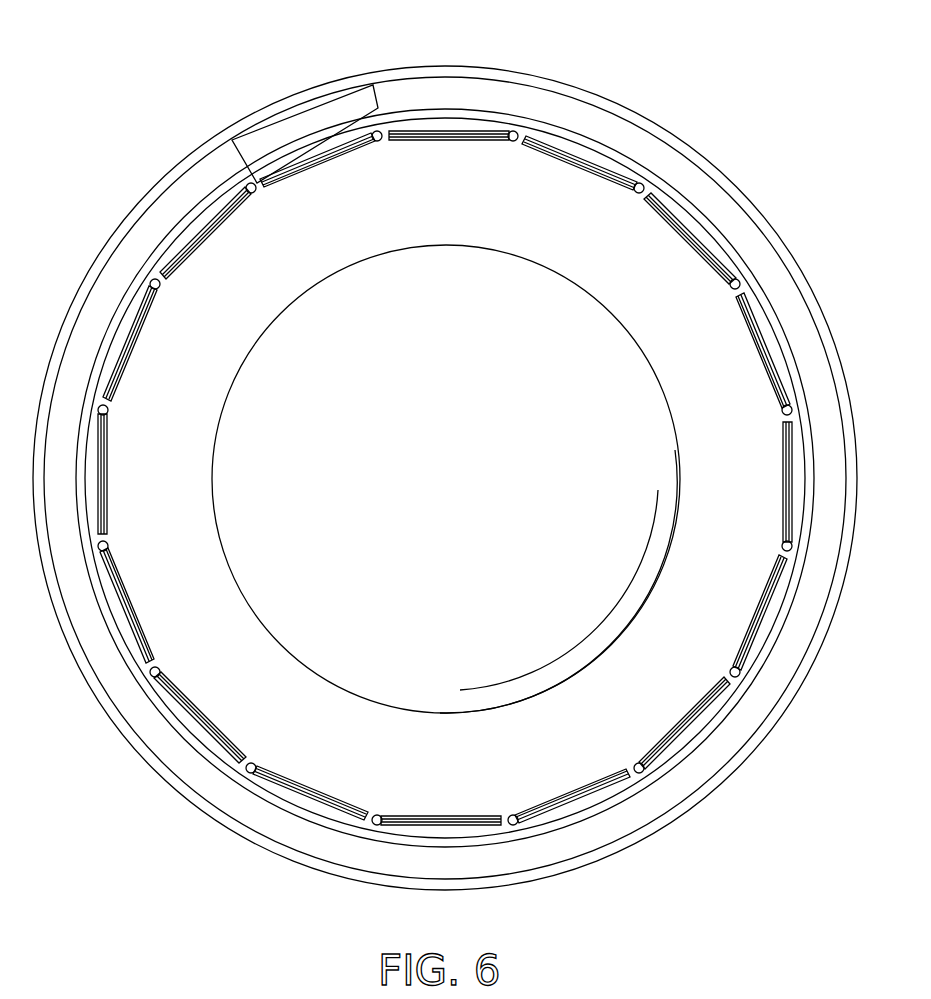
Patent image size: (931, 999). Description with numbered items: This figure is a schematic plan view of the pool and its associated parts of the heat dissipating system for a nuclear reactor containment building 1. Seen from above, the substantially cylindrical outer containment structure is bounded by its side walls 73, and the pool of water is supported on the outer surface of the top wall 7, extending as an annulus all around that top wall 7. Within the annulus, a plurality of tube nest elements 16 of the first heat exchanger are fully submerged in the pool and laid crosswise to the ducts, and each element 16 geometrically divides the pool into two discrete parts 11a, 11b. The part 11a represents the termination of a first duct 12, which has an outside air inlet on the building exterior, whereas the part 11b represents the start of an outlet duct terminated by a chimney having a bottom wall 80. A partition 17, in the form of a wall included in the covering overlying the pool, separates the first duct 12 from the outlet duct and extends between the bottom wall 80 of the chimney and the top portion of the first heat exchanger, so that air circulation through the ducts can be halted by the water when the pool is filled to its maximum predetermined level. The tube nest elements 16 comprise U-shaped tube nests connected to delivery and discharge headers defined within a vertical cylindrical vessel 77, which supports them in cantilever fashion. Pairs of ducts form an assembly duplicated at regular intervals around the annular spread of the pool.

The nuclear reactor containment building 1 is at (590, 70).
The top wall 7 is at (388, 380).
The first pool part 11a is at (208, 363).
The second pool part 11b is at (188, 233).
The first duct 12 is at (330, 90).
The tube nest element 16 is at (118, 360).
The partition 17 is at (374, 128).
The side walls 73 is at (730, 182).
The vertical cylindrical vessel 77 is at (106, 416).
The bottom wall 80 is at (266, 138).